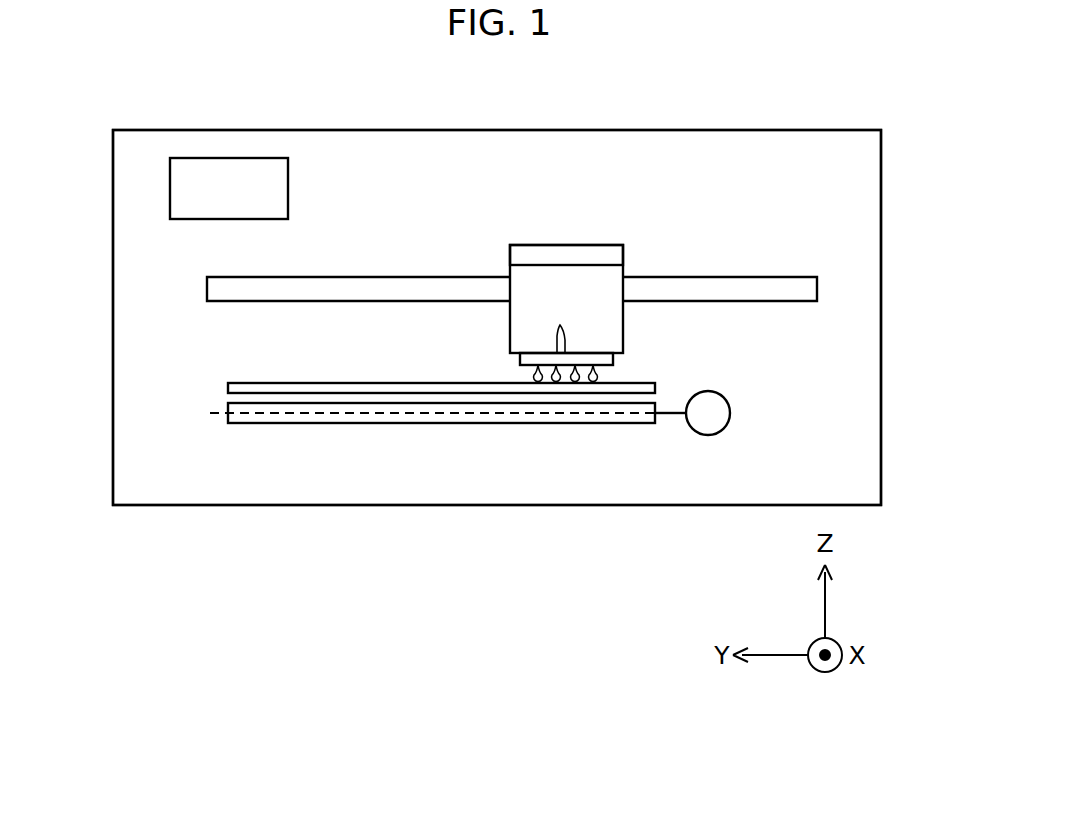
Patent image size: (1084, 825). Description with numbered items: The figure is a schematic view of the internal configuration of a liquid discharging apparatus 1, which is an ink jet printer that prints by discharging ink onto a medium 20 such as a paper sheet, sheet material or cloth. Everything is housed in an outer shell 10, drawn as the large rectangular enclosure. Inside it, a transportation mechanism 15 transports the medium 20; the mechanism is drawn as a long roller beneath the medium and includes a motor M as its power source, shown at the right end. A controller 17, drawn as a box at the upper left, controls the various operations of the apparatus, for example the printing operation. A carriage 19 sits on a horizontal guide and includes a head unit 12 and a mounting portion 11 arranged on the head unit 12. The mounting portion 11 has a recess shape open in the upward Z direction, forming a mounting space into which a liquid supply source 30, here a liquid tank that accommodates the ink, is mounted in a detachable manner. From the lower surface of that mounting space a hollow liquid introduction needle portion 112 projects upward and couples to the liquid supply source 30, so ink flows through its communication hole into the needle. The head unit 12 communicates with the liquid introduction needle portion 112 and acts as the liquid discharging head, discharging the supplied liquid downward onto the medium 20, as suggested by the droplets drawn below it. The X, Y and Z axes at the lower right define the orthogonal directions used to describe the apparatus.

The liquid discharging apparatus 1 is at (815, 123).
The outer shell 10 is at (450, 130).
The controller 17 is at (225, 158).
The carriage 19 is at (610, 299).
The liquid supply source 30 is at (560, 245).
The mounting portion 11 is at (510, 329).
The liquid introduction needle portion 112 is at (567, 340).
The head unit 12 is at (518, 361).
The medium 20 is at (382, 394).
The transportation mechanism 15 is at (660, 405).